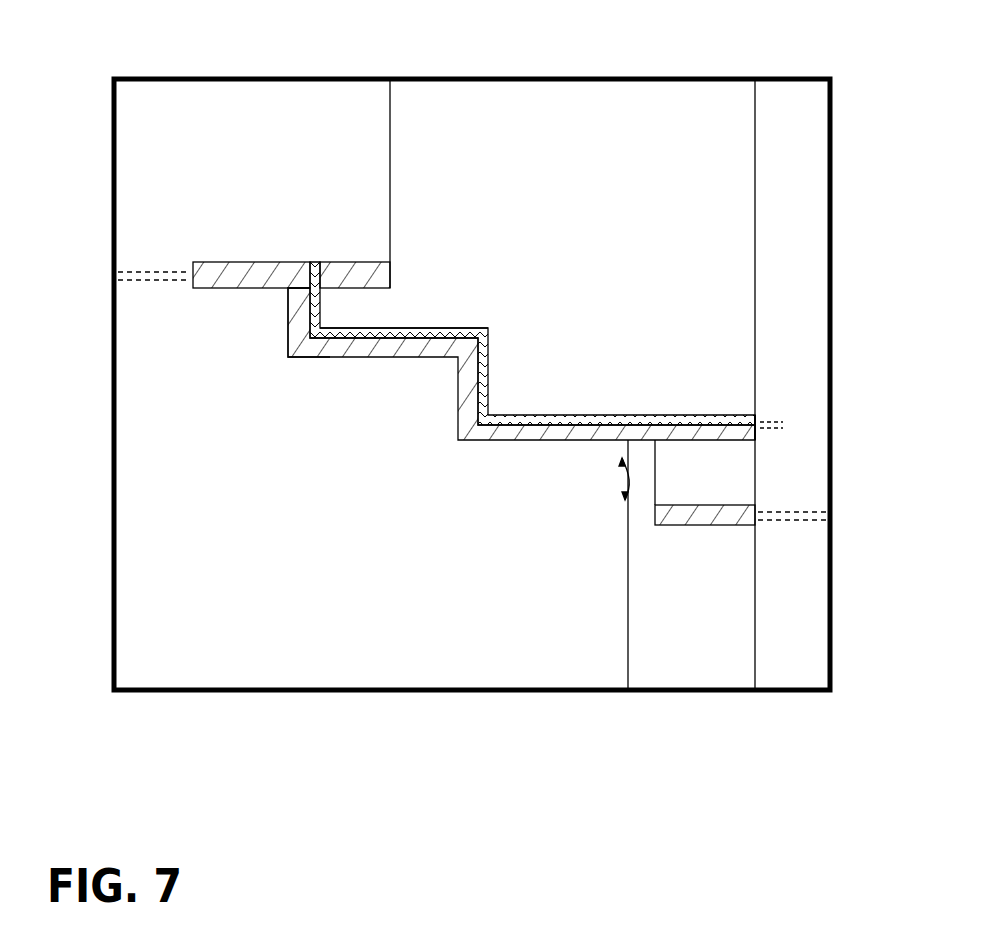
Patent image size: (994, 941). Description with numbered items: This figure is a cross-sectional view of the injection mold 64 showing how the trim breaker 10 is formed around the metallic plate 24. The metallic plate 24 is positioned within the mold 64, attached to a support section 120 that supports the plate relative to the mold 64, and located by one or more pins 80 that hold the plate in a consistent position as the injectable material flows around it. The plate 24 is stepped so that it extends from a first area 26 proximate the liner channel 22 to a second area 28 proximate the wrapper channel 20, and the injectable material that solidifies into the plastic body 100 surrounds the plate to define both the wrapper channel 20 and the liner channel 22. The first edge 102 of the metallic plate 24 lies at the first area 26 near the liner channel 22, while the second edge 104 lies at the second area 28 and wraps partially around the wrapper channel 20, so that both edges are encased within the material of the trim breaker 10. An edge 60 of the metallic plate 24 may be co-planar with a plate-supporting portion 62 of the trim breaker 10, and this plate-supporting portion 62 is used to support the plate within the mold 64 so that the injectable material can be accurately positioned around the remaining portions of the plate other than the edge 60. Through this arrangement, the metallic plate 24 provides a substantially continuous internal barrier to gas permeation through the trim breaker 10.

The trim breaker 10 is at (215, 290).
The wrapper channel 20 is at (350, 312).
The liner channel 22 is at (700, 478).
The metallic plate 24 is at (427, 348).
The first area 26 is at (697, 412).
The second area 28 is at (300, 292).
The edge of the metallic plate 60 is at (768, 425).
The plate-supporting portion 62 is at (758, 414).
The mold 64 is at (408, 697).
The pins 80 is at (372, 330).
The plastic body 100 is at (625, 504).
The first edge 102 is at (756, 430).
The second edge 104 is at (307, 261).
The support section 120 is at (800, 190).